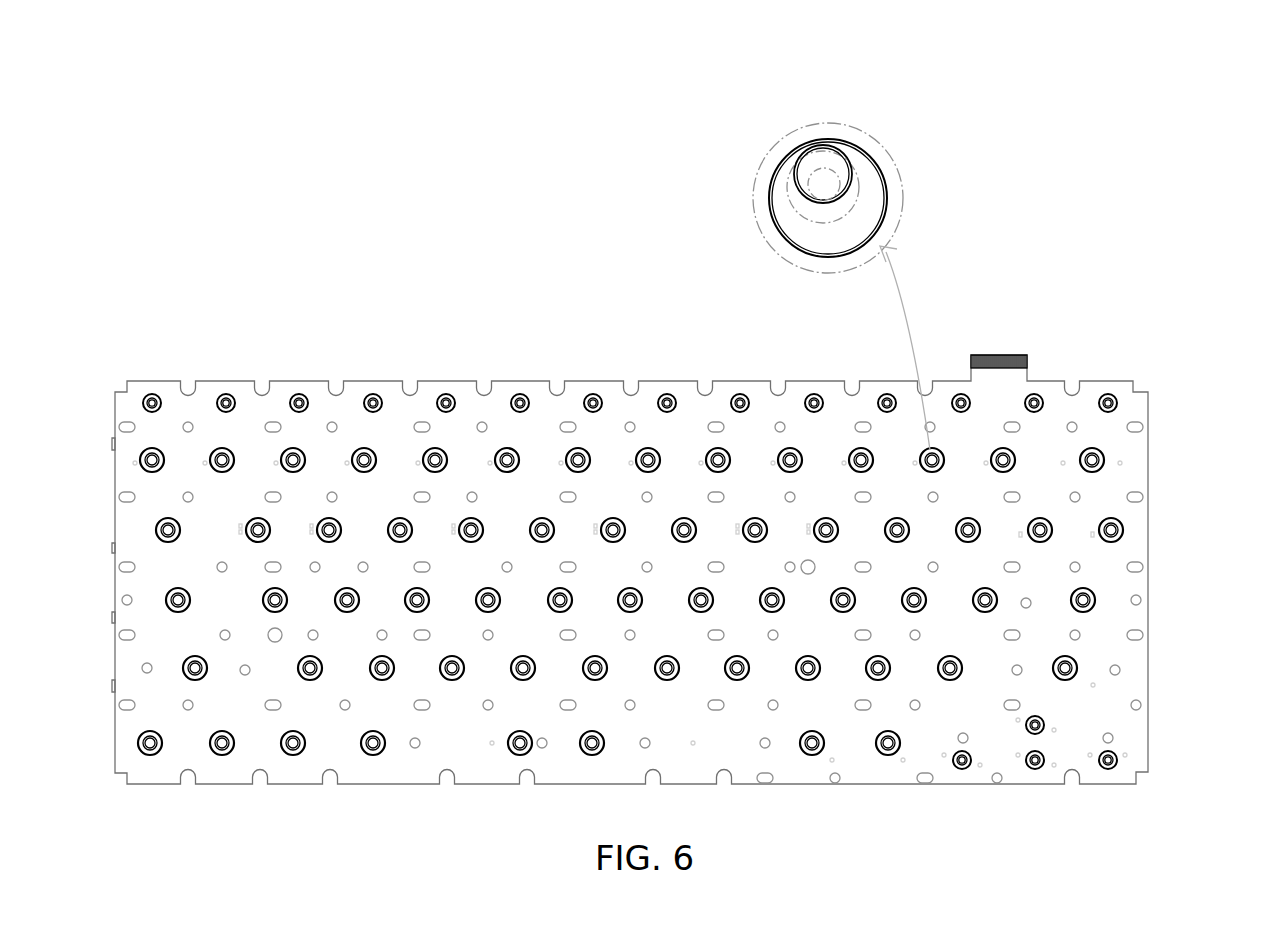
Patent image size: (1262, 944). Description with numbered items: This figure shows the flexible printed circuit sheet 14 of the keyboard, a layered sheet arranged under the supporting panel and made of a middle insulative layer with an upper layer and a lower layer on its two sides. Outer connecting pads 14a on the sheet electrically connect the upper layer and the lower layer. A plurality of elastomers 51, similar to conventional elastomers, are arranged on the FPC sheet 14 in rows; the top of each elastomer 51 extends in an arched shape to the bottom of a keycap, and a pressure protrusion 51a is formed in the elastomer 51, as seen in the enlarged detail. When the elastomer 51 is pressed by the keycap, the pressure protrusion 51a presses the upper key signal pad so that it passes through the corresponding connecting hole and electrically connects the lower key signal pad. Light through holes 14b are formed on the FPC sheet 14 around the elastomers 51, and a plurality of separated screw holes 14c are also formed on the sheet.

The flexible printed circuit (FPC) sheet 14 is at (653, 380).
The outer connecting pads 14a is at (1027, 362).
The light through holes 14b is at (1022, 535).
The screw holes 14c is at (1135, 427).
The elastomer 51 is at (878, 168).
The pressure protrusion 51a is at (823, 184).